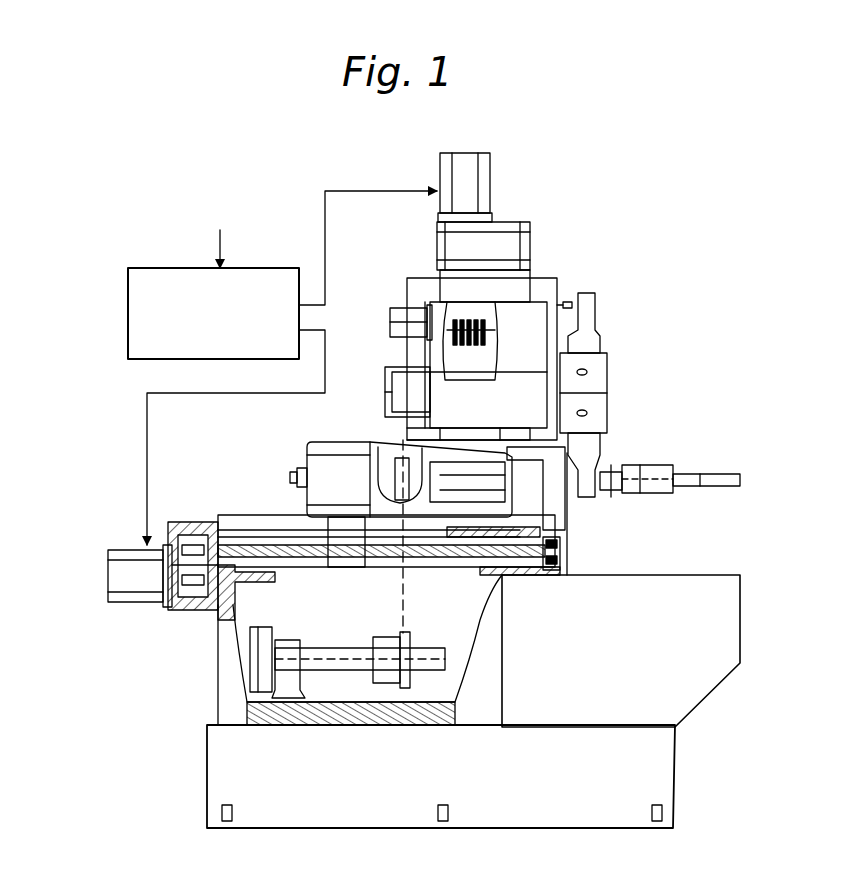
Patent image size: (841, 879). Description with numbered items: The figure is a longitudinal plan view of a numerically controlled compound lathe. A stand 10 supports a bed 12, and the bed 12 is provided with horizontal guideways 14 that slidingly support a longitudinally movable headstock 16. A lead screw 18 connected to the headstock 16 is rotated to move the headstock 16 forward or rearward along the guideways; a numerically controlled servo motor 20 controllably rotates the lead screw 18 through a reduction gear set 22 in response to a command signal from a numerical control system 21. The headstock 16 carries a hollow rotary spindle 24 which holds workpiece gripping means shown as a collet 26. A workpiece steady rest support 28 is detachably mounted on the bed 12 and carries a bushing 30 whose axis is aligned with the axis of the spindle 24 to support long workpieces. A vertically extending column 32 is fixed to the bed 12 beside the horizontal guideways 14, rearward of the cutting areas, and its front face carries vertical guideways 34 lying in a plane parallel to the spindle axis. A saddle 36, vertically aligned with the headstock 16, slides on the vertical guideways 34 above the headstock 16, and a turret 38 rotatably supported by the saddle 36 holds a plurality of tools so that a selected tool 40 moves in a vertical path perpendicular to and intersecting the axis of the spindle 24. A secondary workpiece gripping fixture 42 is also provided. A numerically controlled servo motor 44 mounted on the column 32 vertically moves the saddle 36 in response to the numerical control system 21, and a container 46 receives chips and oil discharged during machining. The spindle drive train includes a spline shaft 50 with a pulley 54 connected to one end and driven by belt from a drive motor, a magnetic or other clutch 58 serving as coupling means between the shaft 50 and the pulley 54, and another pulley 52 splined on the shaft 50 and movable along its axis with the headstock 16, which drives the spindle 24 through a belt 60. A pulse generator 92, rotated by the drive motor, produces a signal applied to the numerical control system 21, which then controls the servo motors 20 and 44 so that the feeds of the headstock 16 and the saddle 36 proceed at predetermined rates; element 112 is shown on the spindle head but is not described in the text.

The stand 10 is at (210, 770).
The bed 12 is at (218, 690).
The horizontal guideways 14 is at (230, 515).
The headstock 16 is at (345, 455).
The lead screw 18 is at (316, 557).
The servo motor 20 is at (120, 550).
The numerical control system 21 is at (255, 272).
The reduction gear set 22 is at (182, 522).
The rotary spindle 24 is at (297, 478).
The collet 26 is at (500, 504).
The workpiece steady rest support 28 is at (568, 535).
The bushing 30 is at (568, 500).
The column 32 is at (545, 278).
The vertical guideways 34 is at (520, 287).
The saddle 36 is at (562, 300).
The turret 38 is at (607, 374).
The tool 40 is at (612, 490).
The secondary workpiece gripping fixture 42 is at (655, 465).
The servo motor 44 is at (492, 190).
The container 46 is at (685, 712).
The spline shaft 50 is at (345, 648).
The pulley 52 is at (385, 637).
The pulley 54 is at (262, 627).
The clutch 58 is at (285, 640).
The belt 60 is at (408, 590).
The pulse generator 92 is at (173, 211).
The cylinder 112 is at (396, 308).